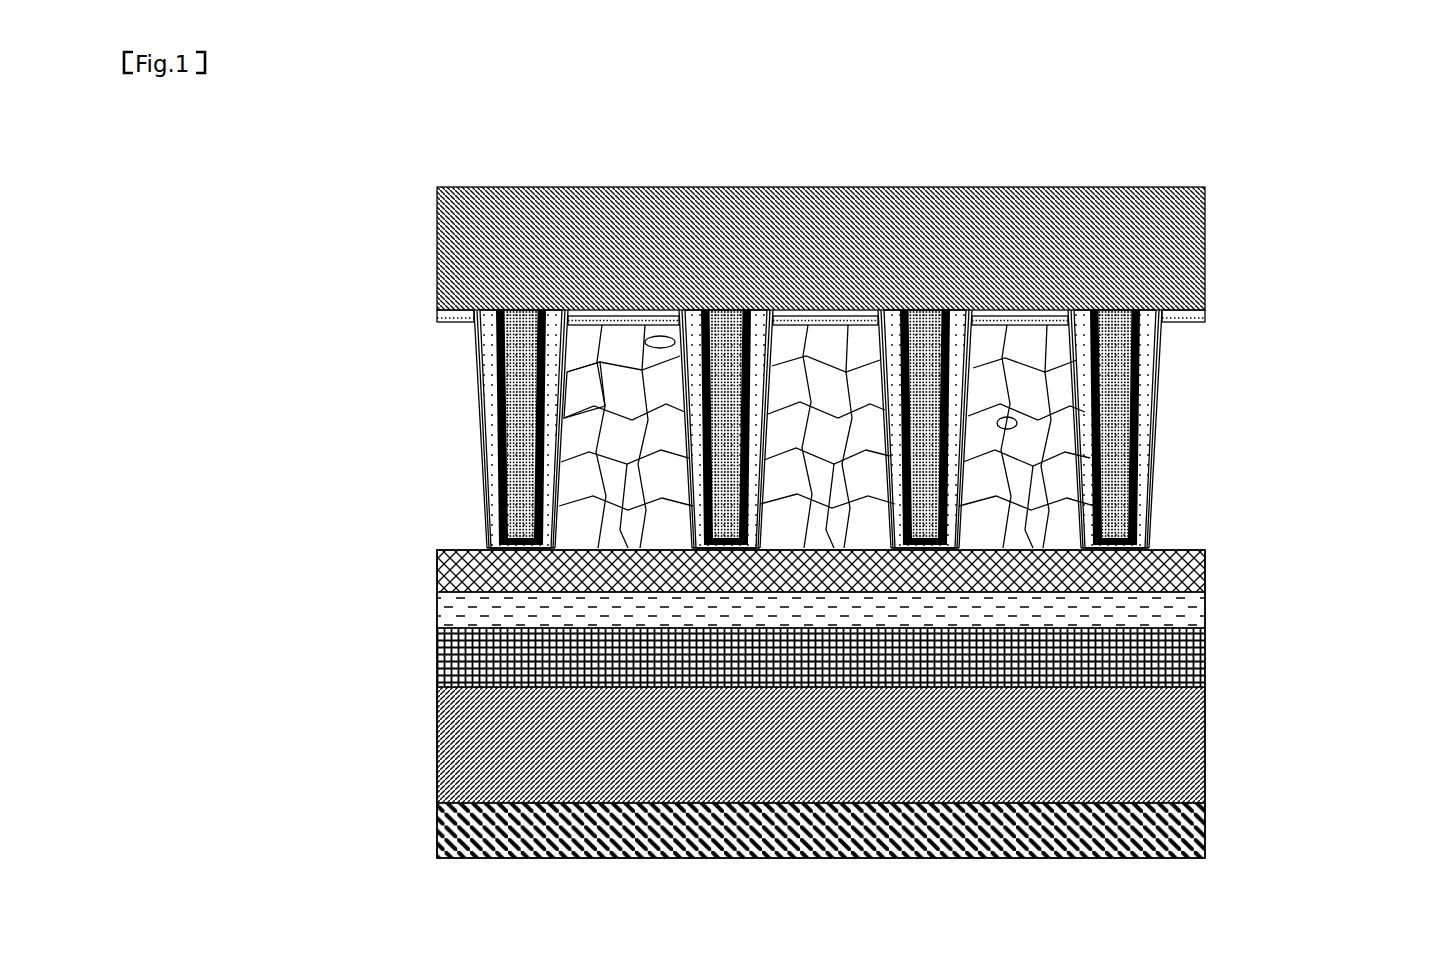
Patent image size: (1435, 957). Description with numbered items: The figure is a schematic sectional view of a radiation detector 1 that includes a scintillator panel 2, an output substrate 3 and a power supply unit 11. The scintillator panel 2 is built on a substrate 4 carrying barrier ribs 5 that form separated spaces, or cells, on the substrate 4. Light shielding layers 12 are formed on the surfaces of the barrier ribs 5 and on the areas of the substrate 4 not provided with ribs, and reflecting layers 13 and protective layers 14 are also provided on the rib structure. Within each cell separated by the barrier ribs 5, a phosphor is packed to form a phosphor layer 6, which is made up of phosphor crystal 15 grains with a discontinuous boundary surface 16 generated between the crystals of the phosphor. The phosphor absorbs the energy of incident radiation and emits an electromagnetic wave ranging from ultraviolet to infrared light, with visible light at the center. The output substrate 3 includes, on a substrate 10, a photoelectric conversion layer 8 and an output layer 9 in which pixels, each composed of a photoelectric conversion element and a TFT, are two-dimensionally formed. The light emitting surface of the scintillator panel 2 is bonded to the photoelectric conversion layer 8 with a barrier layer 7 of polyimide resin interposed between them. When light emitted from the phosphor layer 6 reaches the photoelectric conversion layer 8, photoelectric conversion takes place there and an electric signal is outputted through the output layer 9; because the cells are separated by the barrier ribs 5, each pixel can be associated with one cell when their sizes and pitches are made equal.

The radiation detector 1 is at (260, 177).
The scintillator panel 2 is at (403, 183).
The output substrate 3 is at (403, 549).
The substrate 4 is at (1122, 247).
The barrier ribs 5 is at (1115, 372).
The phosphor layer 6 is at (1035, 497).
The barrier layer 7 is at (1130, 573).
The photoelectric conversion layer 8 is at (1130, 612).
The output layer 9 is at (1130, 660).
The substrate 10 is at (1130, 737).
The power supply unit 11 is at (1130, 826).
The light shielding layers 12 is at (1140, 405).
The reflecting layers 13 is at (1145, 435).
The protective layers 14 is at (1155, 462).
The phosphor crystal 15 is at (595, 352).
The discontinuous boundary surface 16 is at (622, 353).